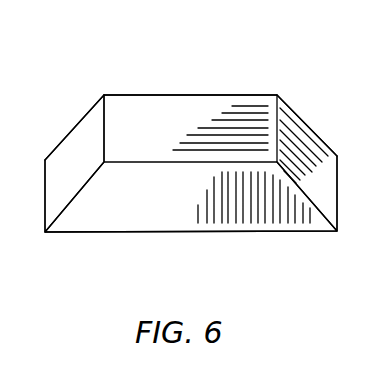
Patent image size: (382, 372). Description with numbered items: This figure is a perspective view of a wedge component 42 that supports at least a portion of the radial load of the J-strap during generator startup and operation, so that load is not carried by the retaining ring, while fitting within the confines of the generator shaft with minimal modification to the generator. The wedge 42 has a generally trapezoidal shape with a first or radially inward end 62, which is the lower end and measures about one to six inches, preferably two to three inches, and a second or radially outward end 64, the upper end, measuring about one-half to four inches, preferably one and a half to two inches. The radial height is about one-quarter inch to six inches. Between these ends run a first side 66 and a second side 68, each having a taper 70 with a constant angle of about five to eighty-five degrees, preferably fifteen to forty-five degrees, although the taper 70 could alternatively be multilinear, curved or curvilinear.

The wedge component 42 is at (199, 53).
The first or radially inward end 62 is at (180, 218).
The second or radially outward end 64 is at (253, 173).
The first side 66 is at (321, 183).
The second side 68 is at (60, 185).
The taper 70 is at (82, 138).